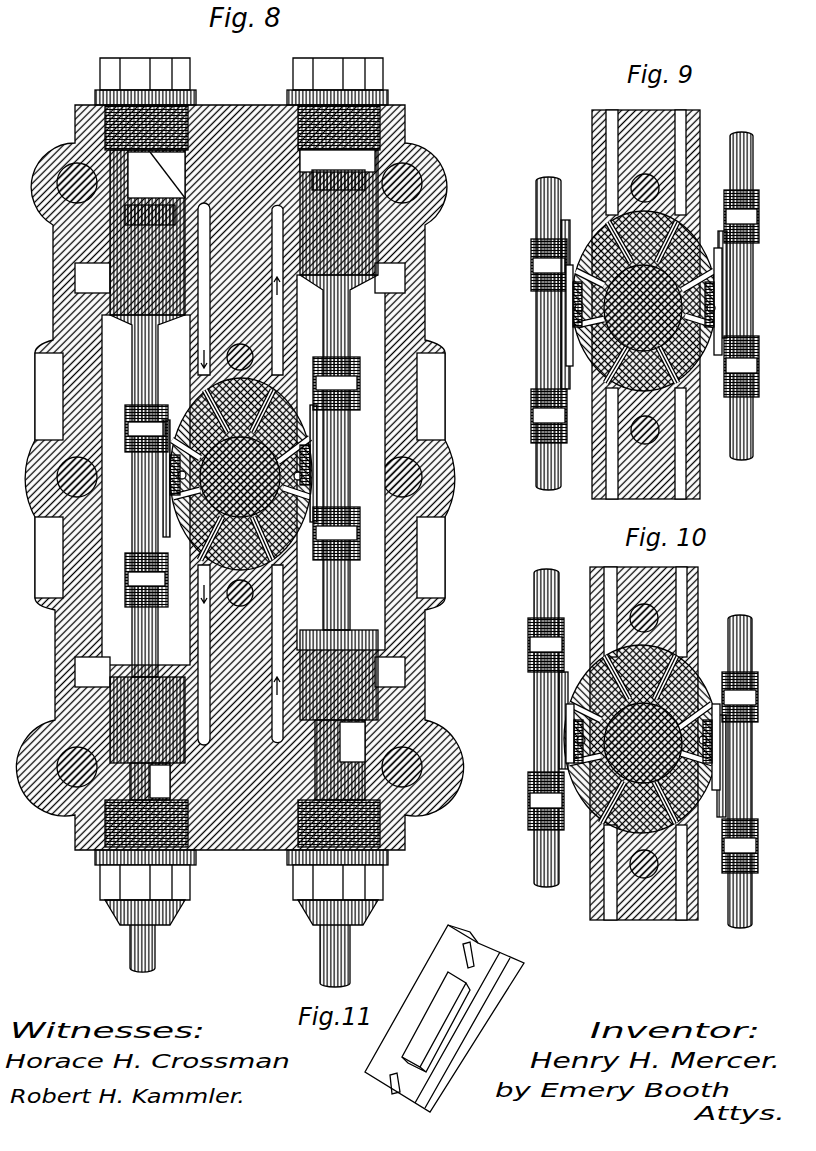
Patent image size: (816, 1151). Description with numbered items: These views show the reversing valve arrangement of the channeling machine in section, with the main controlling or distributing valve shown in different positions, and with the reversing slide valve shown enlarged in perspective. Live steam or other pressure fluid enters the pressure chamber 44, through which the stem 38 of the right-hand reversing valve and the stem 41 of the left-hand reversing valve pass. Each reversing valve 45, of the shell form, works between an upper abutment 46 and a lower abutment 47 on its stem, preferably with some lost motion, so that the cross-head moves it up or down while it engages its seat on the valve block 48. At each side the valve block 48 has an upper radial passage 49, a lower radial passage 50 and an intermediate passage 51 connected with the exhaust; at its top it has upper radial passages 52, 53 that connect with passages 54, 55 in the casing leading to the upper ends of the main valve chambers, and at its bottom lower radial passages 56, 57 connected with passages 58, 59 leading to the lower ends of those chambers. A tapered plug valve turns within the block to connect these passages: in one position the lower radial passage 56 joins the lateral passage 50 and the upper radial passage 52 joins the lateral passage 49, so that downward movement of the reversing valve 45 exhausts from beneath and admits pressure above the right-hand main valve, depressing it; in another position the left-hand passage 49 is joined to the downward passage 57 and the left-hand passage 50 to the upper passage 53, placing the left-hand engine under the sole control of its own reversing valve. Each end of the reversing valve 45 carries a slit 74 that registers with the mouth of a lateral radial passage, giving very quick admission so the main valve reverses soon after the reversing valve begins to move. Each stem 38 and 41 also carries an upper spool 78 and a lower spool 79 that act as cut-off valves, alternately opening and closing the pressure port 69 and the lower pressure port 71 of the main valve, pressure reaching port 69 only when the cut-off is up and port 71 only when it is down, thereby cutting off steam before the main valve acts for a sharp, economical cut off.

In FIG. 8, the stem of the right-hand reversing valve 38 is at (322, 960).
In FIG. 9, the stem of the right-hand reversing valve 38 is at (743, 452).
In FIG. 10, the stem of the right-hand reversing valve 38 is at (741, 921).
In FIG. 8, the stem of the left-hand reversing valve 41 is at (155, 958).
In FIG. 9, the stem of the left-hand reversing valve 41 is at (550, 490).
In FIG. 10, the stem of the left-hand reversing valve 41 is at (543, 875).
In FIG. 8, the pressure chamber 44 is at (243, 470).
In FIG. 8, the reversing valve 45 is at (165, 500).
In FIG. 9, the reversing valve 45 is at (570, 332).
In FIG. 10, the reversing valve 45 is at (569, 720).
In FIG. 11, the reversing valve 45 is at (498, 1010).
In FIG. 8, the upper abutment 46 is at (128, 445).
In FIG. 8, the lower abutment 47 is at (128, 575).
In FIG. 8, the valve block 48 is at (186, 548).
In FIG. 9, the valve block 48 is at (644, 301).
In FIG. 10, the valve block 48 is at (598, 812).
In FIG. 8, the upper radial passage 49 is at (160, 420).
In FIG. 9, the upper radial passage 49 is at (568, 291).
In FIG. 10, the upper radial passage 49 is at (570, 710).
In FIG. 8, the lower radial passage 50 is at (170, 488).
In FIG. 9, the lower radial passage 50 is at (573, 352).
In FIG. 10, the lower radial passage 50 is at (574, 760).
In FIG. 8, the intermediate passage 51 is at (165, 478).
In FIG. 9, the intermediate passage 51 is at (576, 309).
In FIG. 10, the intermediate passage 51 is at (578, 740).
In FIG. 8, the upper radial passage 52 is at (285, 388).
In FIG. 9, the upper radial passage 52 is at (694, 210).
In FIG. 10, the upper radial passage 52 is at (684, 663).
In FIG. 8, the upper radial passage 53 is at (210, 400).
In FIG. 9, the upper radial passage 53 is at (608, 236).
In FIG. 10, the upper radial passage 53 is at (607, 650).
In FIG. 8, the passage 54 is at (270, 330).
In FIG. 9, the passage 54 is at (683, 132).
In FIG. 10, the passage 54 is at (682, 585).
In FIG. 8, the passage 55 is at (203, 313).
In FIG. 9, the passage 55 is at (610, 142).
In FIG. 10, the passage 55 is at (608, 587).
In FIG. 8, the lower radial passage 56 is at (282, 555).
In FIG. 9, the lower radial passage 56 is at (681, 384).
In FIG. 10, the lower radial passage 56 is at (686, 812).
In FIG. 8, the lower radial passage 57 is at (206, 578).
In FIG. 9, the lower radial passage 57 is at (608, 414).
In FIG. 10, the lower radial passage 57 is at (609, 838).
In FIG. 8, the passage 58 is at (280, 620).
In FIG. 9, the passage 58 is at (685, 466).
In FIG. 10, the passage 58 is at (681, 872).
In FIG. 8, the passage 59 is at (204, 612).
In FIG. 9, the passage 59 is at (610, 475).
In FIG. 10, the passage 59 is at (608, 896).
In FIG. 8, the pressure port 69 is at (90, 277).
In FIG. 8, the lower pressure port 71 is at (88, 672).
In FIG. 11, the slit 74 is at (465, 952).
In FIG. 8, the upper spool 78 is at (113, 242).
In FIG. 8, the lower spool 79 is at (113, 722).